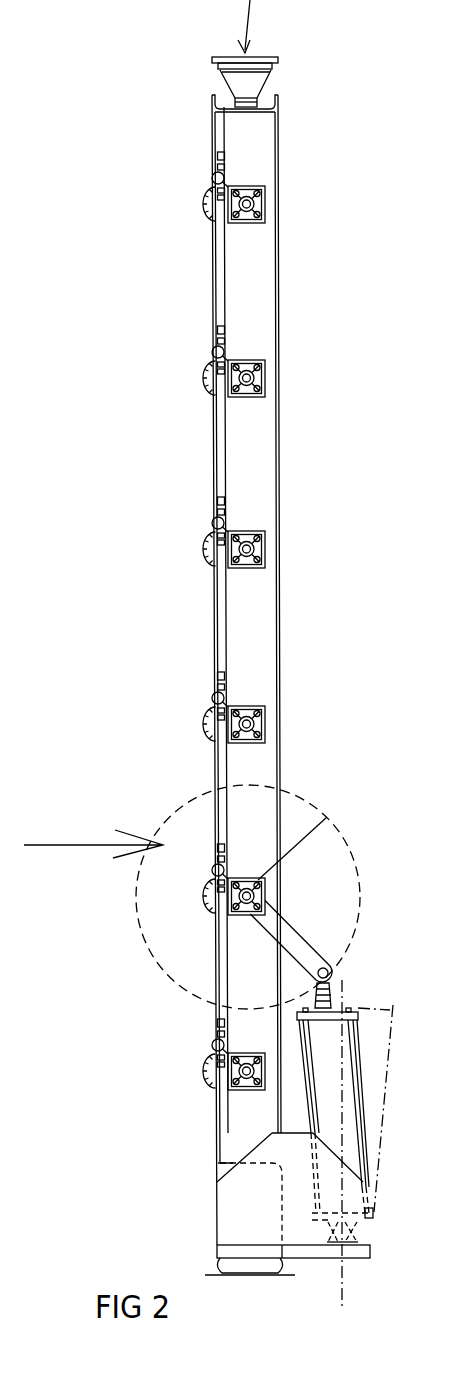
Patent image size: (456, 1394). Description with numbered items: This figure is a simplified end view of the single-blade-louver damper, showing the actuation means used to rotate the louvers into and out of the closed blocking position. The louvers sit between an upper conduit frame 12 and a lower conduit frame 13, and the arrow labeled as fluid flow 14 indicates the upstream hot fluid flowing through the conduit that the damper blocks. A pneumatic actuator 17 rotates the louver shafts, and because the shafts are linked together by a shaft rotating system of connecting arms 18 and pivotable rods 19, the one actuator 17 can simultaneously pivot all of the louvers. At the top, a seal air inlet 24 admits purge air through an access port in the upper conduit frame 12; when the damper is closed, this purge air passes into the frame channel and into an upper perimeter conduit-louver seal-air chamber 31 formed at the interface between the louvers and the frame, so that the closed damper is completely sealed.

The upper conduit frame 12 is at (210, 100).
The lower conduit frame 13 is at (215, 1255).
The fluid flow 14 is at (50, 845).
The actuator 17 is at (365, 1116).
The connecting arms 18 is at (215, 968).
The pivotable rods 19 is at (318, 953).
The seal air inlet 24 is at (270, 72).
The upper perimeter conduit-louver seal-air chamber 31 is at (263, 143).